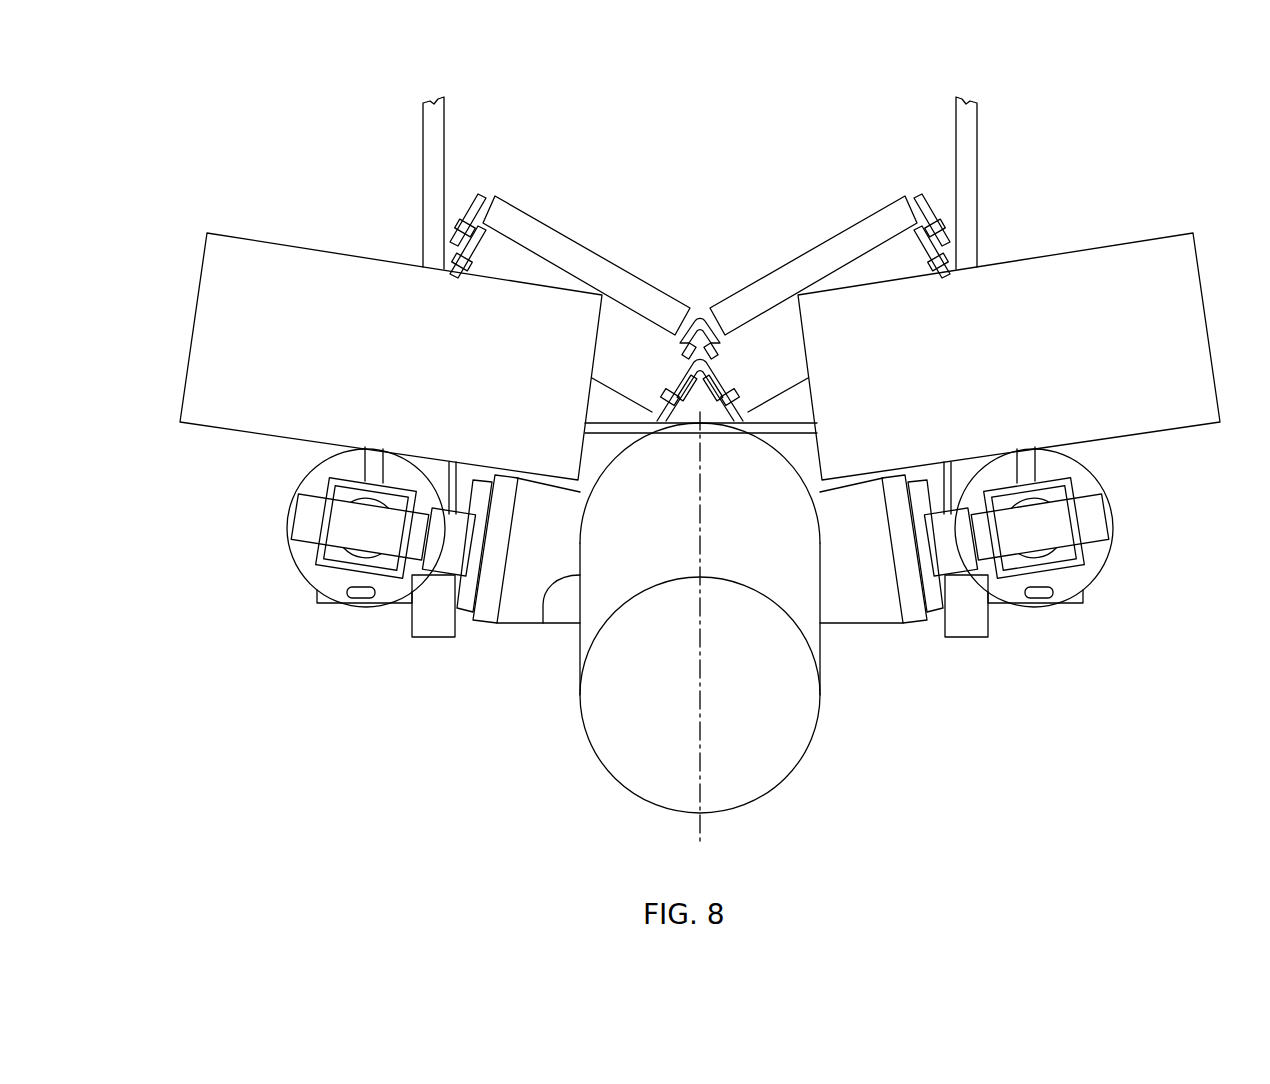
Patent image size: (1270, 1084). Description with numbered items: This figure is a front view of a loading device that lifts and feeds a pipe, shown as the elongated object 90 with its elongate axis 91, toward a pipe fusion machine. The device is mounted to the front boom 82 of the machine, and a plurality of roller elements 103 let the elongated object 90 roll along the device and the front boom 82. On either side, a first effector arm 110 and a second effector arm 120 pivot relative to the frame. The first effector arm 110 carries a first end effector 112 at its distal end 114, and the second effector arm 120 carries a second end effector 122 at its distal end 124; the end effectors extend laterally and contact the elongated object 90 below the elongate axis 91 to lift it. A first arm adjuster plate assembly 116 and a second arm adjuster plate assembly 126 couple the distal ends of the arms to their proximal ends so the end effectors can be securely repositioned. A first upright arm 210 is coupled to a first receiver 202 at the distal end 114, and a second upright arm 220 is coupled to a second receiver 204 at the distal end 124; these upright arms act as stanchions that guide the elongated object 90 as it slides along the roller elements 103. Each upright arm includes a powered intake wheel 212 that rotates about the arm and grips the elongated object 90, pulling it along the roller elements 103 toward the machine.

The front boom 82 is at (1016, 183).
The roller elements 103 is at (575, 240).
The powered intake wheel 212 is at (322, 250).
The second effector arm 120 is at (315, 514).
The first effector arm 110 is at (1084, 514).
The second receiver 204 is at (347, 473).
The second upright arm 220 is at (390, 473).
The first upright arm 210 is at (1010, 473).
The first receiver 202 is at (1062, 473).
The second arm adjuster plate assembly 126 is at (287, 533).
The first arm adjuster plate assembly 116 is at (1113, 533).
The distal end 124 is at (313, 568).
The distal end 114 is at (1088, 567).
The second end effector 122 is at (508, 607).
The first end effector 112 is at (895, 607).
The elongated object 90 is at (790, 779).
The elongate axis 91 is at (703, 828).